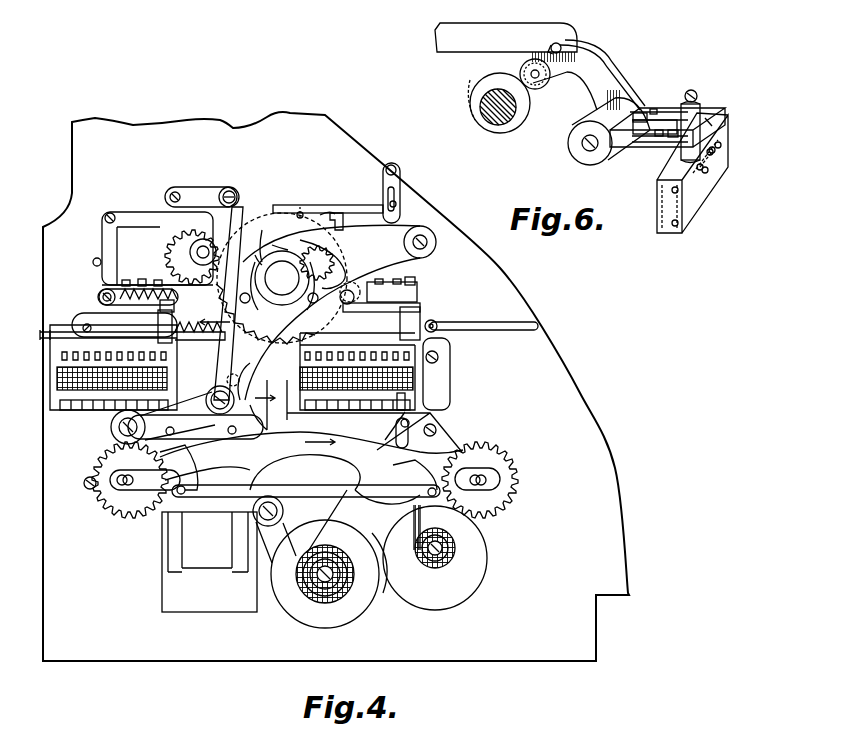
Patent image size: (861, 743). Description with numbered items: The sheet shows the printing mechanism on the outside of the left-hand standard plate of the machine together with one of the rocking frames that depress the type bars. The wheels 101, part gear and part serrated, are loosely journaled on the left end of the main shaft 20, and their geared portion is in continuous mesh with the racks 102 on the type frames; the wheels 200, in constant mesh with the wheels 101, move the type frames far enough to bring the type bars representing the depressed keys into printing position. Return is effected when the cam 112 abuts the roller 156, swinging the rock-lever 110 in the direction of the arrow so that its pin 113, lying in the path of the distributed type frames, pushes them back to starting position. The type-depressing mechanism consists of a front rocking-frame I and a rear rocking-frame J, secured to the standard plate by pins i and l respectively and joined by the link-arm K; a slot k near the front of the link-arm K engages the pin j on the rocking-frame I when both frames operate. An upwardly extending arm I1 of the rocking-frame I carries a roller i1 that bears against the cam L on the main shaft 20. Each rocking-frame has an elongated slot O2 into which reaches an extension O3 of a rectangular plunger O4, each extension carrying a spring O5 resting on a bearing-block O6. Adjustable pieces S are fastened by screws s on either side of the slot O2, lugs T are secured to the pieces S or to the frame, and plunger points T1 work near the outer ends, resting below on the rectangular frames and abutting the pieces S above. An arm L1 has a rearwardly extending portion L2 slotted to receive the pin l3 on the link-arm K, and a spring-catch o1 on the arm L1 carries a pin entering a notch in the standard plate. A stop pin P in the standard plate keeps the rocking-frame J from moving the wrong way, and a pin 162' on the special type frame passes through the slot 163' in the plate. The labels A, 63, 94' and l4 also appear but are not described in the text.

In FIG. 4, the frame A is at (56, 250).
In FIG. 4, the stop pin P is at (95, 258).
In FIG. 4, the link-arm K is at (153, 223).
In FIG. 6, the link-arm K is at (475, 62).
In FIG. 4, the pin l is at (99, 297).
In FIG. 4, the rear rocking-frame J is at (148, 281).
In FIG. 4, the screws s is at (380, 279).
In FIG. 6, the screws s is at (620, 160).
In FIG. 4, the adjustable pieces S is at (395, 282).
In FIG. 6, the adjustable pieces S is at (672, 140).
In FIG. 4, the extension O3 is at (175, 270).
In FIG. 6, the extension O3 is at (702, 105).
In FIG. 4, the disc 63 is at (204, 246).
In FIG. 4, the wheels 200 is at (180, 222).
In FIG. 4, the part gear and part serrated wheels 101 is at (242, 218).
In FIG. 4, the roller 156 is at (240, 230).
In FIG. 4, the plunger points T1 is at (175, 292).
In FIG. 6, the plunger points T1 is at (670, 157).
In FIG. 4, the rock-lever 110 is at (175, 318).
In FIG. 4, the type rack 94' is at (94, 367).
In FIG. 4, the racks 102 is at (202, 335).
In FIG. 4, the pin 113 is at (230, 380).
In FIG. 4, the main shaft 20 is at (284, 277).
In FIG. 6, the main shaft 20 is at (498, 125).
In FIG. 4, the upwardly extending arm I1 is at (345, 262).
In FIG. 6, the upwardly extending arm I1 is at (600, 75).
In FIG. 4, the pin i is at (330, 275).
In FIG. 6, the pin i is at (576, 145).
In FIG. 4, the rearwardly extending portion L2 is at (358, 218).
In FIG. 4, the arm L1 is at (391, 164).
In FIG. 4, the spring-catch o1 is at (396, 202).
In FIG. 4, the slot k is at (340, 220).
In FIG. 6, the slot k is at (543, 80).
In FIG. 4, the pin j is at (325, 213).
In FIG. 6, the pin j is at (562, 47).
In FIG. 4, the arm l4 is at (265, 240).
In FIG. 4, the cam 112 is at (262, 254).
In FIG. 4, the pin l3 is at (282, 250).
In FIG. 4, the front rocking-frame I is at (412, 304).
In FIG. 6, the front rocking-frame I is at (635, 110).
In FIG. 4, the lugs T is at (385, 290).
In FIG. 6, the lugs T is at (645, 158).
In FIG. 4, the pin 162' is at (446, 317).
In FIG. 4, the slot 163' is at (484, 321).
In FIG. 6, the cam L is at (478, 115).
In FIG. 6, the roller i1 is at (537, 90).
In FIG. 6, the elongated slot O2 is at (647, 133).
In FIG. 6, the rectangular plungers O4 is at (712, 128).
In FIG. 6, the spring O5 is at (715, 150).
In FIG. 6, the bearing-block O6 is at (708, 170).